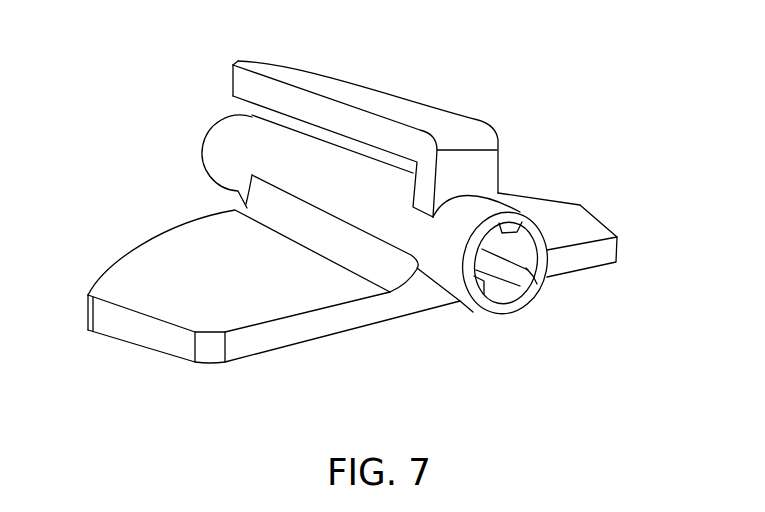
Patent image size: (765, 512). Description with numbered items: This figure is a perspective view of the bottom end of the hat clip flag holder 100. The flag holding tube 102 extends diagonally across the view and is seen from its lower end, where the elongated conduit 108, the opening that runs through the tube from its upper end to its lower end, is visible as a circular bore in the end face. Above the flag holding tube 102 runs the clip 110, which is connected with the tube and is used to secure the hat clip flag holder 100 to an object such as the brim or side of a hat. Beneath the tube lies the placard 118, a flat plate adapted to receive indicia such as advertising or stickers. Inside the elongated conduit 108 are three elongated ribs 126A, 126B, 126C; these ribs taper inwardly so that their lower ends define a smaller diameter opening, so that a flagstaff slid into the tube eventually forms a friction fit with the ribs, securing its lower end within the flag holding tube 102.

The hat clip flag holder 100 is at (180, 167).
The flag holding tube 102 is at (232, 149).
The elongated conduit 108 is at (505, 296).
The clip 110 is at (335, 88).
The placard 118 is at (156, 338).
The elongated rib 126A is at (528, 218).
The elongated rib 126B is at (482, 292).
The elongated rib 126C is at (543, 272).